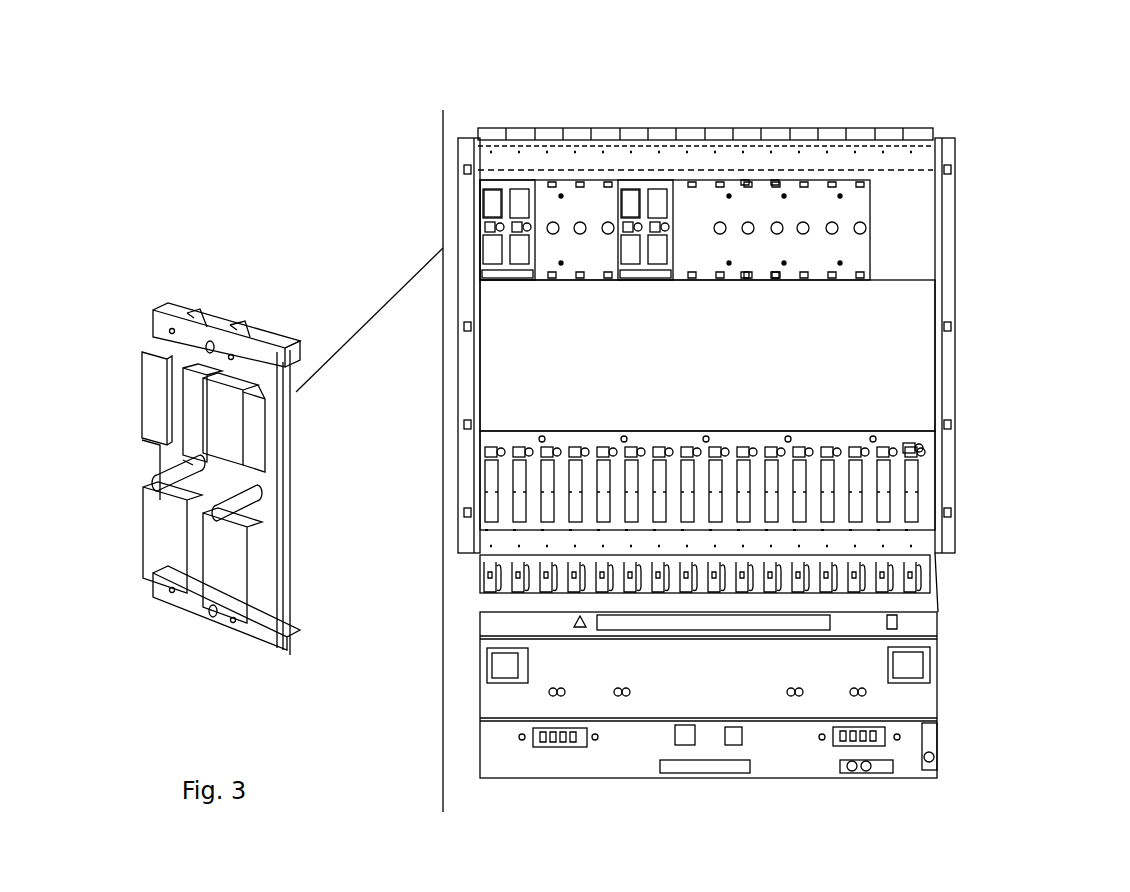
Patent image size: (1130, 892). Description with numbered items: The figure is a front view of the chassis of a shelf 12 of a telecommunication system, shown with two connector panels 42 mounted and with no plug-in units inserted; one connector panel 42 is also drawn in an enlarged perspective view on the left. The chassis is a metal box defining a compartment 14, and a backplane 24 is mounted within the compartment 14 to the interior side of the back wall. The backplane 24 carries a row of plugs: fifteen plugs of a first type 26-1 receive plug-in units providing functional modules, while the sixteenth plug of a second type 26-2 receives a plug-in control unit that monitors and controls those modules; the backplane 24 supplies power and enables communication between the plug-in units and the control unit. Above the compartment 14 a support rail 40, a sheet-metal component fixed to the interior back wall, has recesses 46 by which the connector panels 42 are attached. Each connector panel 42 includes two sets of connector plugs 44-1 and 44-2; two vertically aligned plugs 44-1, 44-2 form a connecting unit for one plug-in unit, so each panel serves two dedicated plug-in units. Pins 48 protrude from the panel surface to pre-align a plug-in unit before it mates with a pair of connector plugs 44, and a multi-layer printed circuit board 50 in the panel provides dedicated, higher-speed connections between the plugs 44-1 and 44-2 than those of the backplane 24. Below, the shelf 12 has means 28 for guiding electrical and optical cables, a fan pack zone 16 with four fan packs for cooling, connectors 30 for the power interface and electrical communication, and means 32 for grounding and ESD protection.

The shelf 12 is at (978, 277).
The compartment 14 is at (677, 376).
The fan pack zone 16 is at (897, 692).
The backplane 24 is at (928, 448).
The first type of plug 26-1 is at (853, 500).
The second type of plug 26-2 is at (907, 474).
The means for guiding cables 28 is at (925, 580).
The connectors for power interface and electrical communication 30 is at (537, 738).
The means for grounding and ESD protection 32 is at (735, 745).
The support rail 40 is at (848, 195).
The connector panel 42 is at (506, 195).
The pair of connector plugs 44 is at (490, 197).
The connector plug 44-1 is at (160, 528).
The connector plug 44-2 is at (253, 450).
The recesses 46 is at (774, 178).
The pins 48 is at (222, 452).
The multi-layer printed circuit board 50 is at (287, 352).